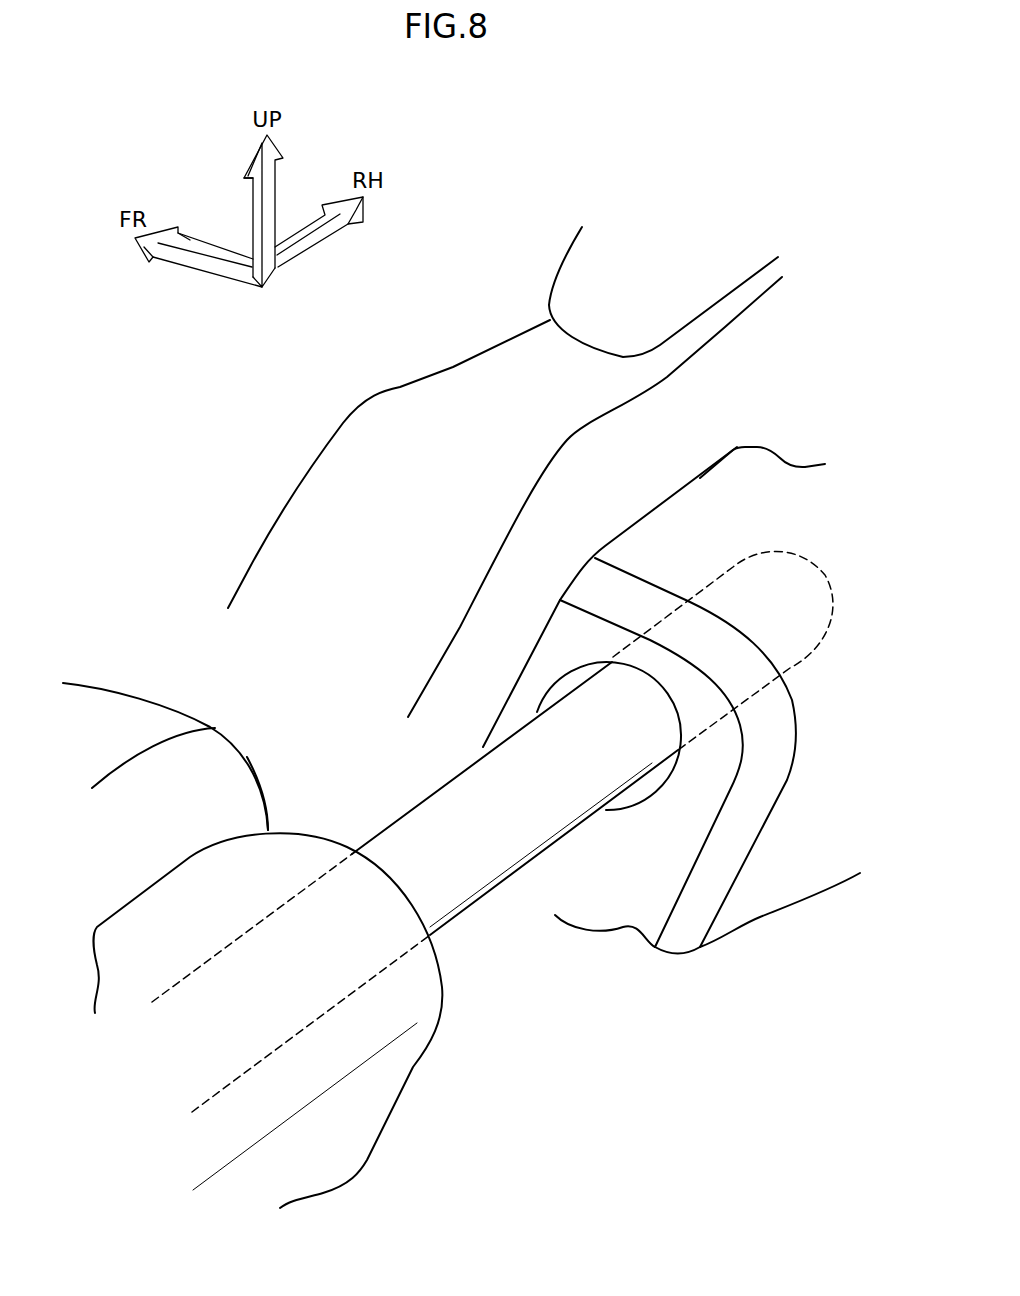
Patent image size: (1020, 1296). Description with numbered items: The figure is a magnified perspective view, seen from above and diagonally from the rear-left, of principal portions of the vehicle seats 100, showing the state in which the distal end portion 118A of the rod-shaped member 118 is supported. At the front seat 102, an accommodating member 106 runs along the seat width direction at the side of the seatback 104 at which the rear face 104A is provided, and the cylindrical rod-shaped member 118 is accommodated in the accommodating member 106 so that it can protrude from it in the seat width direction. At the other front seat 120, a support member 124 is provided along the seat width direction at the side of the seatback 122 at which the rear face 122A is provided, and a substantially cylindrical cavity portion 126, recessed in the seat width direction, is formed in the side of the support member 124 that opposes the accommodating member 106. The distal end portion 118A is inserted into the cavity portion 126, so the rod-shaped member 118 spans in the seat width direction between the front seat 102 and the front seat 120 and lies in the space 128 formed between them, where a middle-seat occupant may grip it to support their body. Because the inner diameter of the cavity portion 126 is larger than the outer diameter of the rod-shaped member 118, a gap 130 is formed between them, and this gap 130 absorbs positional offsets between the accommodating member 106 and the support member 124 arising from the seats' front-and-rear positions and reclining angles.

The vehicle seats 100 is at (422, 528).
The front seat 102 is at (212, 704).
The seatback 104 is at (137, 707).
The rear face 104A is at (245, 787).
The accommodating member 106 is at (368, 1112).
The rod-shaped member 118 is at (492, 795).
The distal end portion 118A is at (767, 563).
The front seat 120 is at (505, 472).
The seatback 122 is at (380, 420).
The rear face 122A is at (541, 528).
The support member 124 is at (772, 898).
The cavity portion 126 is at (603, 706).
The space (gap) 128 is at (407, 767).
The gap 130 is at (647, 787).